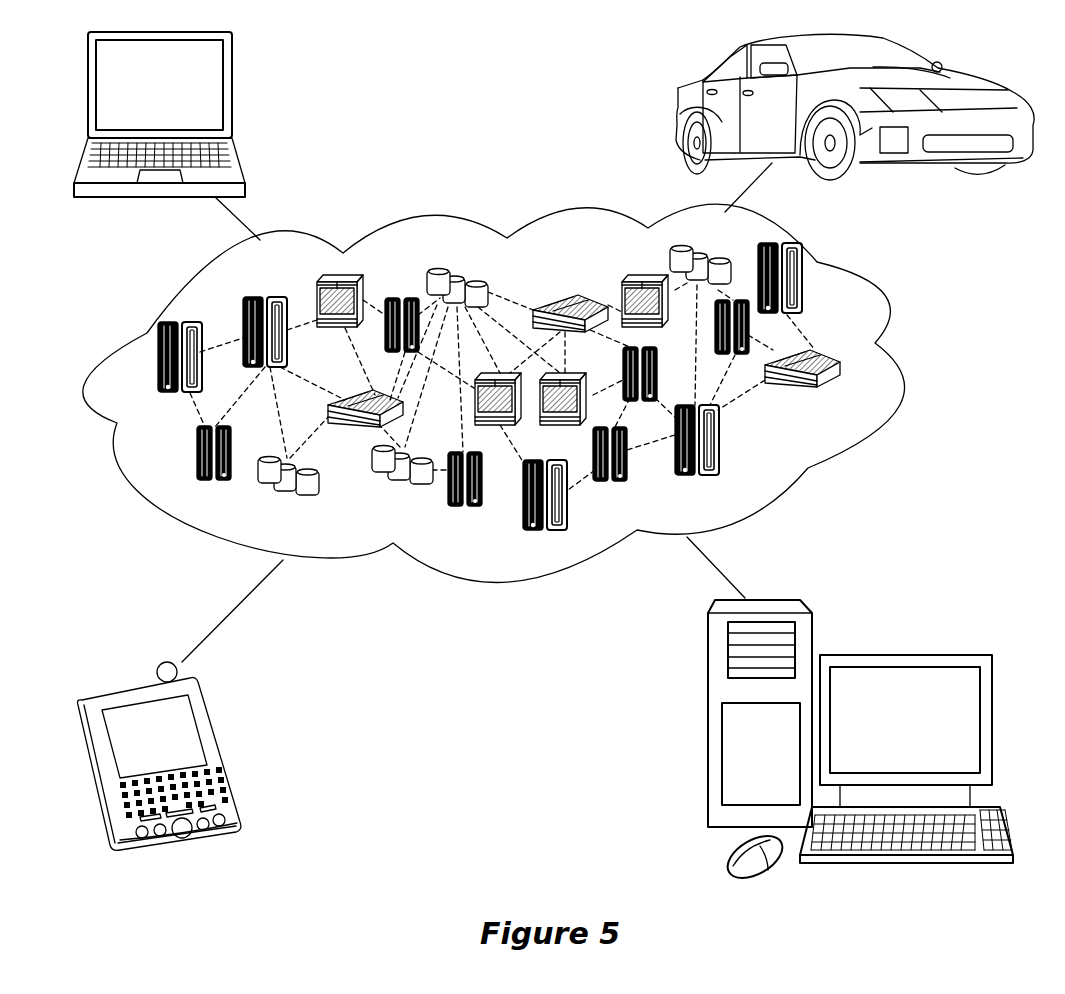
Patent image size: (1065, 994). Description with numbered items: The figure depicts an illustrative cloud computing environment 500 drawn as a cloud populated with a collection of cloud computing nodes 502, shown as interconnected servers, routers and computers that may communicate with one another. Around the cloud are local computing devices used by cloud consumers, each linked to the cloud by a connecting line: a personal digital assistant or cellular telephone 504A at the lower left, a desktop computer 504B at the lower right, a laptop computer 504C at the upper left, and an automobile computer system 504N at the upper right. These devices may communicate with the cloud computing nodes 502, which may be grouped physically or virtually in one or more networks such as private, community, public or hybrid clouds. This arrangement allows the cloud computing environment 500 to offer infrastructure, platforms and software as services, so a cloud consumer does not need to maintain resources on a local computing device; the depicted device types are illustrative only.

The cloud computing environment 500 is at (850, 362).
The cloud computing nodes 502 is at (846, 398).
The personal digital assistant (PDA) or cellular telephone 504A is at (210, 717).
The desktop computer 504B is at (890, 653).
The laptop computer 504C is at (232, 60).
The automobile computer system 504N is at (680, 108).